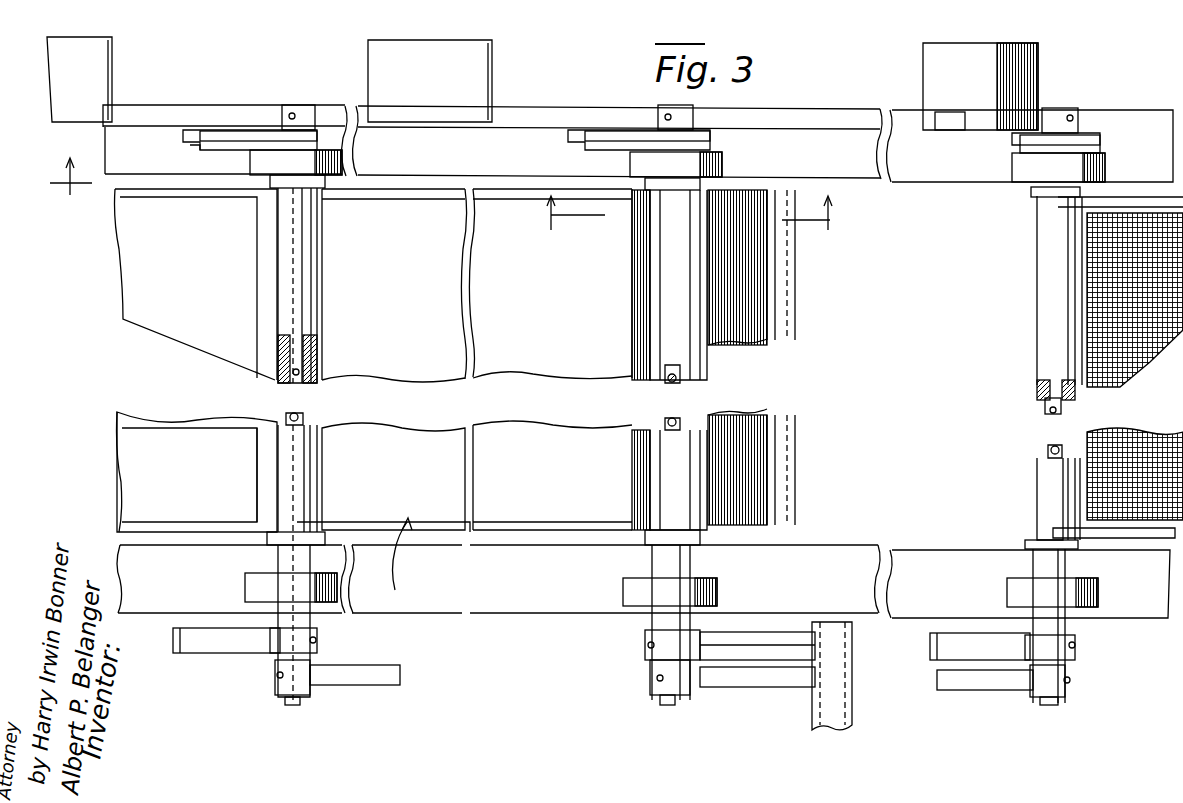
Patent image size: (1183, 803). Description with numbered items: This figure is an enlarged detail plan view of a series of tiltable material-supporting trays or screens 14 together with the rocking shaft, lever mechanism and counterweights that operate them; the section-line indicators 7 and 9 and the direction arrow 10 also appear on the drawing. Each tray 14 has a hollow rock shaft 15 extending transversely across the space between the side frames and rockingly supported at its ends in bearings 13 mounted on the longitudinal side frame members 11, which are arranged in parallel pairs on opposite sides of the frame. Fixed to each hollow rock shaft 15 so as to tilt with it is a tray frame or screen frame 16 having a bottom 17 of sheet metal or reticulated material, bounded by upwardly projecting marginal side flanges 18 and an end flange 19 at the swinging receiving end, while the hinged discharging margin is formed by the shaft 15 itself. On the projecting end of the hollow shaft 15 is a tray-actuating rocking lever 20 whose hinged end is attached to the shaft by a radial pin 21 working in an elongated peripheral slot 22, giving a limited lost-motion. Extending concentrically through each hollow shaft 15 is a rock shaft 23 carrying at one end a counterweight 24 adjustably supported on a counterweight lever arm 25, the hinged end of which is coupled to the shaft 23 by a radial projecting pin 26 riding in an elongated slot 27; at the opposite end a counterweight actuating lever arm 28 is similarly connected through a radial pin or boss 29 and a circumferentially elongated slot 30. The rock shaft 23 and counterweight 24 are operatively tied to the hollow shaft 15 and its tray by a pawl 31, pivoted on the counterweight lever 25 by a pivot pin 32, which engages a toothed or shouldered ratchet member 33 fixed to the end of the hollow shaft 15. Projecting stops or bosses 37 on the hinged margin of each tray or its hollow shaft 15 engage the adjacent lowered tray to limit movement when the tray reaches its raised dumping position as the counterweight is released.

The section line 7- 7 is at (65, 177).
The section line 9- 9 is at (694, 223).
The direction arrow 10 is at (406, 554).
The longitudinal side frame member 11 is at (815, 125).
The bearing 13 is at (258, 590).
The tiltable supporting-tray or screen 14 is at (760, 273).
The hollow rock shaft 15 is at (315, 340).
The tray frame or screen frame 16 is at (180, 190).
The bottom 17 is at (418, 190).
The marginal side flange 18 is at (488, 190).
The end flange 19 is at (795, 306).
The tray-actuating rocking lever 20 is at (206, 642).
The radial pin 21 is at (320, 642).
The elongated peripheral slot 22 is at (648, 650).
The rock shaft 23 is at (300, 355).
The counterweight 24 is at (108, 56).
The counterweight lever arm 25 is at (170, 112).
The radial projecting pin 26 is at (292, 104).
The elongated slot 27 is at (690, 112).
The counterweight actuating lever arm 28 is at (372, 682).
The radial pin or boss 29 is at (275, 675).
The circumferentially elongated slot 30 is at (662, 687).
The pawl 31 is at (258, 130).
The pivot pin 32 is at (205, 150).
The ratchet member 33 is at (333, 135).
The projecting stop or boss 37 is at (640, 193).